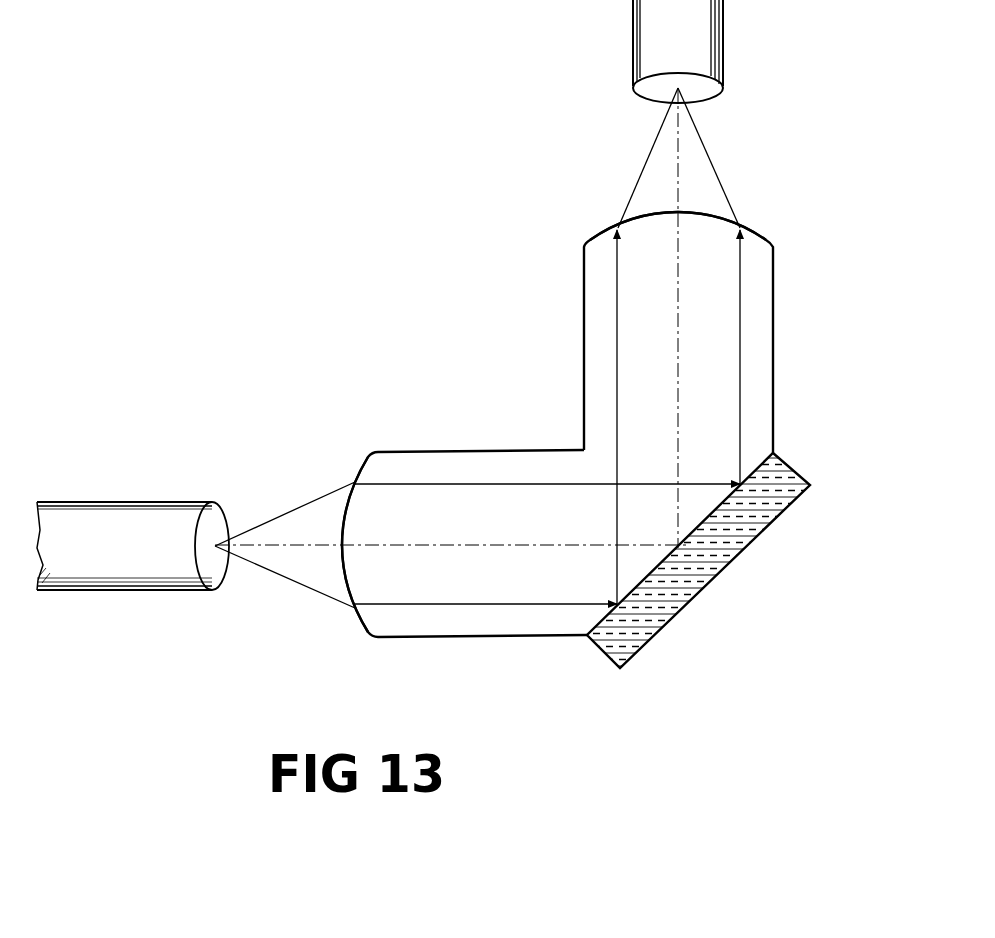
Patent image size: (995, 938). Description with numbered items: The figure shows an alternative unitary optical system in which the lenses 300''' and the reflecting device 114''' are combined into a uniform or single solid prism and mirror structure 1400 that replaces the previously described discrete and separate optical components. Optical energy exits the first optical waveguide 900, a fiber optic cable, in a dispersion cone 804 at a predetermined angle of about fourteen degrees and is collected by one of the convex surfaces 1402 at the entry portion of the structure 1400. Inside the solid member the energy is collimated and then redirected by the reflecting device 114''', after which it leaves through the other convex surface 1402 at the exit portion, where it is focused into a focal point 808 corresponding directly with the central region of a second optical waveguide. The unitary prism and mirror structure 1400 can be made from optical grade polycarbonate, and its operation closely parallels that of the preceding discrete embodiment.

The focal point 808 is at (688, 97).
The lenses 300''' is at (557, 424).
The convex surfaces 1402 is at (748, 233).
The unitary prism and mirror structure 1400 is at (742, 335).
The reflecting device 114''' is at (697, 570).
The first optical waveguide 900 is at (166, 502).
The dispersion cone 804 is at (320, 500).